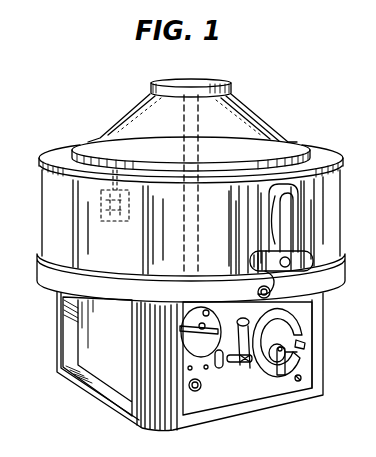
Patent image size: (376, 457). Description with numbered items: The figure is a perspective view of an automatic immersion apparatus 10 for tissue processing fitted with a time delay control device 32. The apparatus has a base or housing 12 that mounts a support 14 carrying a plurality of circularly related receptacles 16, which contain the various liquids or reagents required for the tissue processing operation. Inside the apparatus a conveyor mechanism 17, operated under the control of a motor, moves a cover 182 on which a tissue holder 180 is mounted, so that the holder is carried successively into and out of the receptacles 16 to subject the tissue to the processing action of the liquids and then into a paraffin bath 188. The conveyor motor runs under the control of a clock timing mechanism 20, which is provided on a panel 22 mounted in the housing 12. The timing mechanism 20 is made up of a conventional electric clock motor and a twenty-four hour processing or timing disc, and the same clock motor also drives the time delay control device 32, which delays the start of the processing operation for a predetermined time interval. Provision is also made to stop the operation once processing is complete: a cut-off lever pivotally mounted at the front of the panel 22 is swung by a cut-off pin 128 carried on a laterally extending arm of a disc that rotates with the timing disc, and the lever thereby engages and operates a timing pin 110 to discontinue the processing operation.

The automatic immersion apparatus 10 is at (102, 124).
The cover 182 is at (245, 108).
The conveyor mechanism 17 is at (198, 128).
The receptacles 16 is at (42, 192).
The tissue holder 180 is at (100, 220).
The paraffin bath 188 is at (290, 222).
The support 14 is at (50, 286).
The housing 12 is at (78, 398).
The panel 22 is at (218, 392).
The time delay control device 32 is at (225, 320).
The clock timing mechanism 20 is at (303, 323).
The cut-off pin 128 is at (304, 346).
The timing pin 110 is at (249, 369).